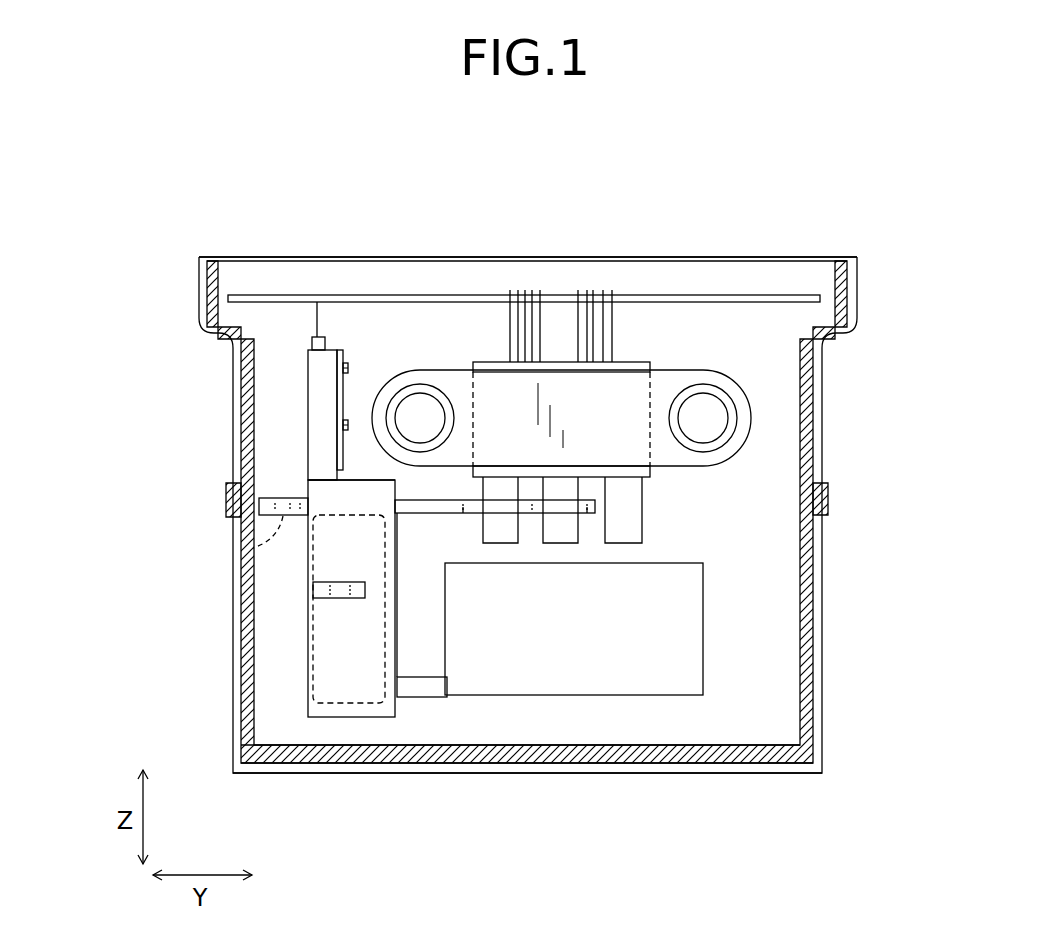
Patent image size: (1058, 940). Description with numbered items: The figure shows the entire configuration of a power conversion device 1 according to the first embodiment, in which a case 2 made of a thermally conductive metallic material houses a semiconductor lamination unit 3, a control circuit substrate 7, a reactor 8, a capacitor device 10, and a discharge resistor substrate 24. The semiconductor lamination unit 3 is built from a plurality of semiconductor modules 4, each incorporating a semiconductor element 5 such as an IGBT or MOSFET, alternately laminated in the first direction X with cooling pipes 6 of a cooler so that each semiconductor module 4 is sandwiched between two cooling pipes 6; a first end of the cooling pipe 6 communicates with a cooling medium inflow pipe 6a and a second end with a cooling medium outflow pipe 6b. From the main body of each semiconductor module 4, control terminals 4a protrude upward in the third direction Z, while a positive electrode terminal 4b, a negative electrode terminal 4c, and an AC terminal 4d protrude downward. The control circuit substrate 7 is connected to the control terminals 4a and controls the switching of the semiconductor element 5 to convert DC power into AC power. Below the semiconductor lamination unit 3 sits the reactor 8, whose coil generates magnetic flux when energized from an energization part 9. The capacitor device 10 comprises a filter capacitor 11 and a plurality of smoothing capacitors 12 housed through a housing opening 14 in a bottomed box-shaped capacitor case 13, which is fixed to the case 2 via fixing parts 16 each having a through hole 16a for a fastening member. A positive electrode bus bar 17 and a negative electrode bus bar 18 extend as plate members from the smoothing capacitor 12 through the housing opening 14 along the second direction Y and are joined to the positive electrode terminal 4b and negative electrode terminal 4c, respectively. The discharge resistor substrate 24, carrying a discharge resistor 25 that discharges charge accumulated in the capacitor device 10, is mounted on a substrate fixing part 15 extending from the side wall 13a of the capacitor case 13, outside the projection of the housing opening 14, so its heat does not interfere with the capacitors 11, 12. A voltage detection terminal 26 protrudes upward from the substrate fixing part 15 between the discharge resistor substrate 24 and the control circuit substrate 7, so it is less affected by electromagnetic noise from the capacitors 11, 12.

The power conversion device 1 is at (645, 220).
The case 2 is at (747, 770).
The semiconductor lamination unit 3 is at (762, 432).
The semiconductor module 4 is at (679, 506).
The semiconductor element 5 is at (561, 419).
The control terminals 4a is at (532, 283).
The positive electrode terminal 4b is at (503, 537).
The negative electrode terminal 4c is at (560, 537).
The AC terminal 4d is at (628, 527).
The cooling pipes 6 is at (630, 338).
The cooling medium inflow pipe 6a is at (713, 410).
The cooling medium outflow pipe 6b is at (418, 400).
The control circuit substrate 7 is at (781, 292).
The reactor 8 is at (707, 663).
The energization part 9 is at (428, 688).
The capacitor device 10 is at (471, 517).
The filter capacitor 11 is at (249, 609).
The smoothing capacitors 12 is at (308, 672).
The capacitor case 13 is at (269, 541).
The side wall 13a is at (357, 478).
The housing opening 14 is at (403, 681).
The substrate fixing part 15 is at (323, 375).
The fixing parts 16 is at (256, 507).
The through hole 16a is at (335, 582).
The positive electrode bus bar 17 is at (463, 507).
The negative electrode bus bar 18 is at (587, 507).
The discharge resistor substrate 24 is at (403, 327).
The discharge resistor 25 is at (350, 390).
The voltage detection terminal 26 is at (316, 293).